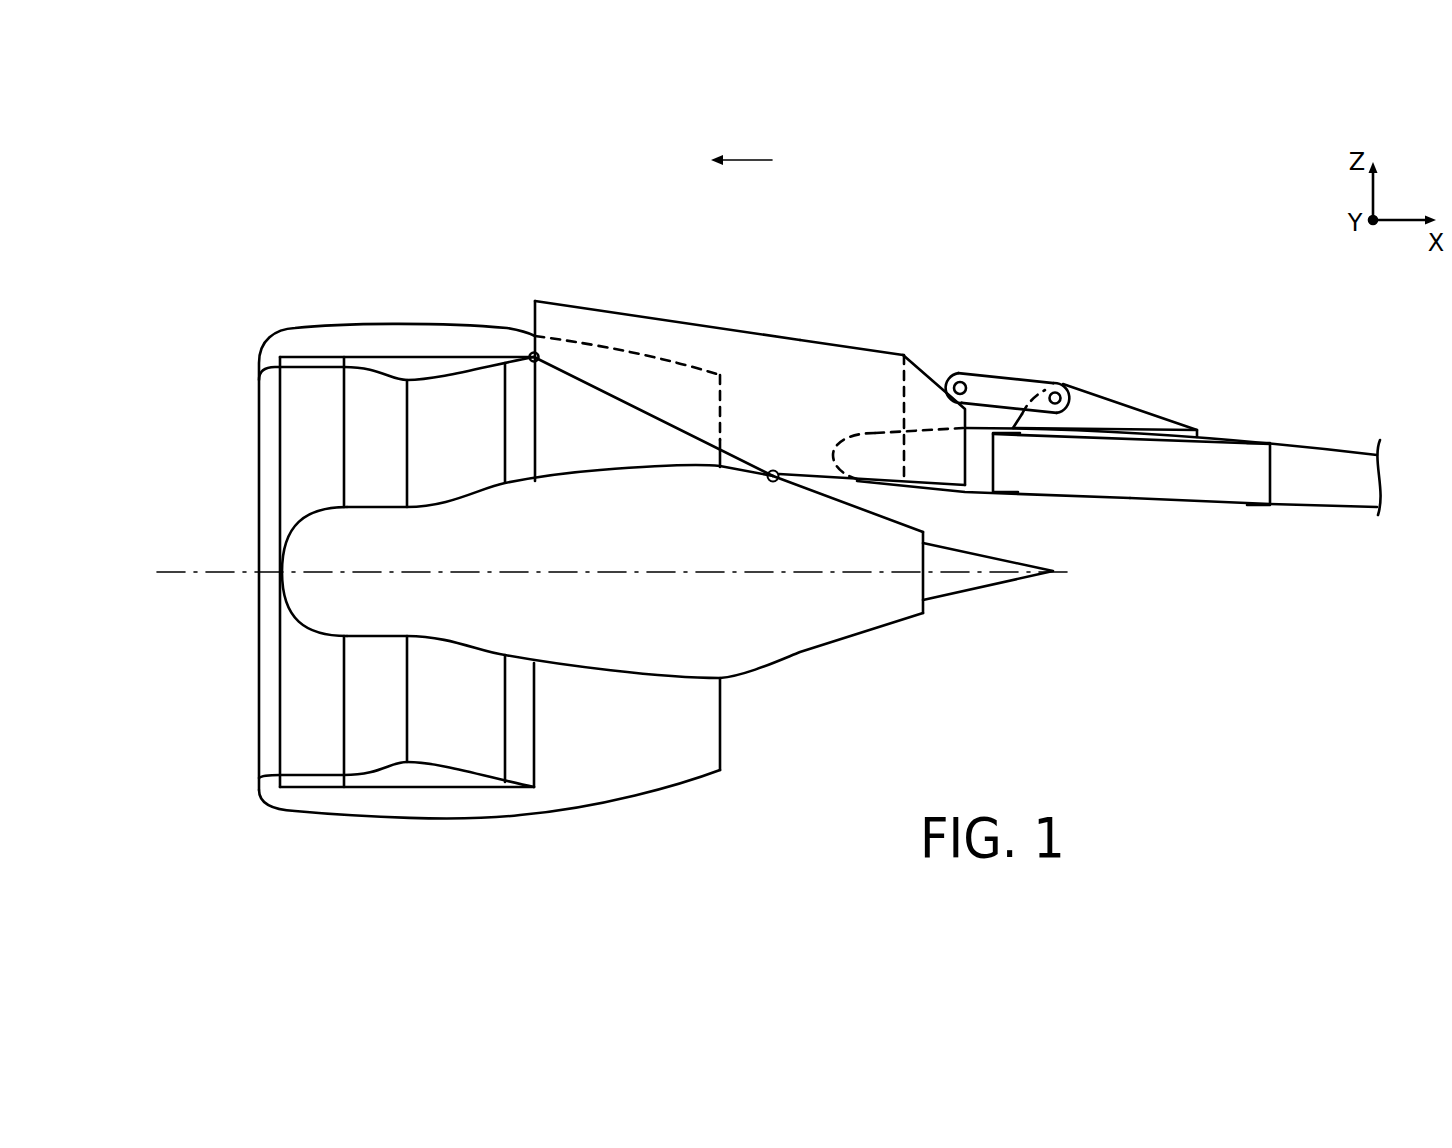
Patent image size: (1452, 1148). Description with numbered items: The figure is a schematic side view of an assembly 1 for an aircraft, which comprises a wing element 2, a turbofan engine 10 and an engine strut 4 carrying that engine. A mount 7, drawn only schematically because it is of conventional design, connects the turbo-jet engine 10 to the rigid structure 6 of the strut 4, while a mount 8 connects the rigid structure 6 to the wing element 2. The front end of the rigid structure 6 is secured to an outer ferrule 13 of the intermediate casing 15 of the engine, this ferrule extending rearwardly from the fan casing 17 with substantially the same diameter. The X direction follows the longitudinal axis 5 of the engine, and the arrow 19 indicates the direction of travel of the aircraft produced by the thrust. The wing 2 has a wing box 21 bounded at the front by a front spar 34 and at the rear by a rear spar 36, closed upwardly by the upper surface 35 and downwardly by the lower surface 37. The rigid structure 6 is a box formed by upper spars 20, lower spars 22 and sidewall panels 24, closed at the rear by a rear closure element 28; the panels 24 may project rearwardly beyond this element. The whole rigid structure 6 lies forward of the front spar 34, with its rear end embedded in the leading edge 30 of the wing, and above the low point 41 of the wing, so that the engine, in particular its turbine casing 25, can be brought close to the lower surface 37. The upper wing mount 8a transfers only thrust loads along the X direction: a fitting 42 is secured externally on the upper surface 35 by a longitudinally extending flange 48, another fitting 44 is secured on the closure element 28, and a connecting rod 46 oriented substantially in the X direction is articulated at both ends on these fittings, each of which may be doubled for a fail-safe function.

The assembly 1 is at (381, 181).
The wing element 2 is at (1351, 439).
The engine strut 4 is at (638, 282).
The longitudinal axis 5 is at (180, 570).
The rigid structure 6 is at (851, 306).
The mount 7 is at (557, 365).
The mount 8 is at (1019, 345).
The upper wing mount 8a is at (1107, 352).
The turbofan engine 10 is at (489, 612).
The outer ferrule 13 is at (530, 352).
The intermediate casing 15 is at (407, 572).
The fan casing 17 is at (403, 375).
The arrow 19 is at (748, 160).
The upper spars 20 is at (633, 312).
The wing box 21 is at (1131, 530).
The lower spars 22 is at (828, 474).
The sidewall panels 24 is at (772, 358).
The turbine casing 25 is at (783, 658).
The rear closure element 28 is at (905, 405).
The leading edge 30 is at (872, 430).
The front spar 34 is at (990, 474).
The upper surface 35 is at (1224, 432).
The rear spar 36 is at (1272, 483).
The lower surface 37 is at (1112, 503).
The low point 41 is at (1153, 505).
The fitting 42 is at (1104, 412).
The fitting 44 is at (948, 370).
The connecting rod 46 is at (1015, 385).
The flange 48 is at (1155, 430).